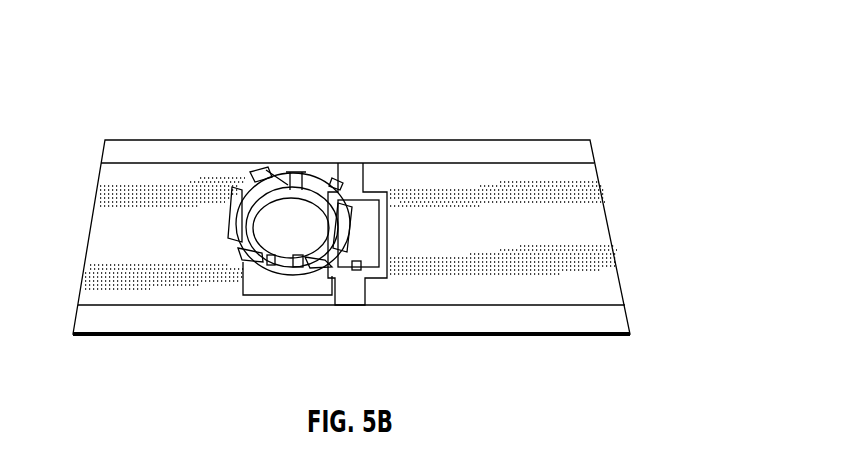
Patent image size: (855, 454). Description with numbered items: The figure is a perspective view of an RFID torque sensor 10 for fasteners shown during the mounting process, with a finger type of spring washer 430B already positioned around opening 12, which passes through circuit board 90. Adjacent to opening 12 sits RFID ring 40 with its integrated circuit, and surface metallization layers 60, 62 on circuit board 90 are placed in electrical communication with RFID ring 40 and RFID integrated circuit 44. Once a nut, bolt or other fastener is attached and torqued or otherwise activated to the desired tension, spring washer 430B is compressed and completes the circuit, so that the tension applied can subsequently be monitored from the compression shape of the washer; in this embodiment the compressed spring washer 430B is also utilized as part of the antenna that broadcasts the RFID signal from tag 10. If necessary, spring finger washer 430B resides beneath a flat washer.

The RFID-based torque sensor 10 is at (103, 50).
The opening 12 is at (293, 222).
The spring finger washer 430B is at (293, 180).
The RFID ring 40 is at (370, 192).
The RFID integrated circuit 44 is at (364, 282).
The surface metallization layer 60 is at (553, 233).
The surface metallization layer 62 is at (163, 180).
The circuit board 90 is at (618, 327).